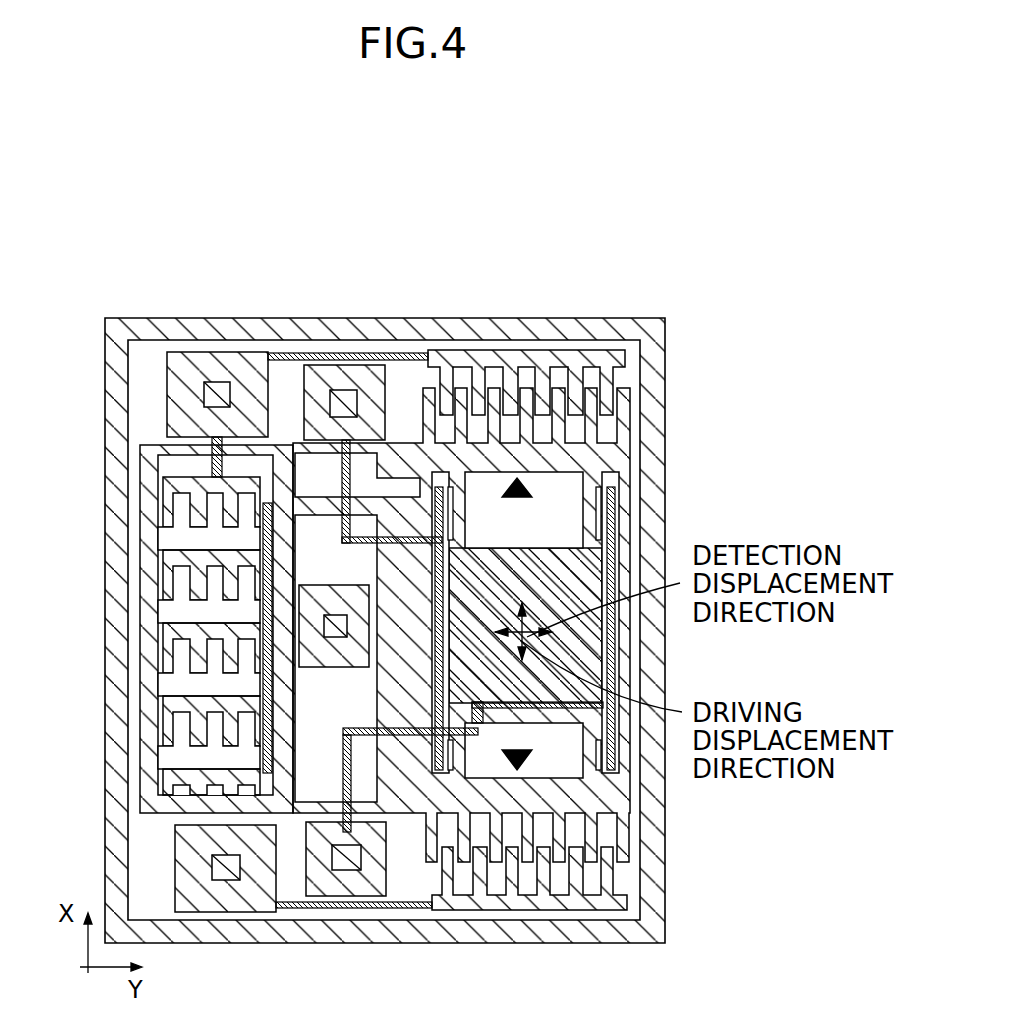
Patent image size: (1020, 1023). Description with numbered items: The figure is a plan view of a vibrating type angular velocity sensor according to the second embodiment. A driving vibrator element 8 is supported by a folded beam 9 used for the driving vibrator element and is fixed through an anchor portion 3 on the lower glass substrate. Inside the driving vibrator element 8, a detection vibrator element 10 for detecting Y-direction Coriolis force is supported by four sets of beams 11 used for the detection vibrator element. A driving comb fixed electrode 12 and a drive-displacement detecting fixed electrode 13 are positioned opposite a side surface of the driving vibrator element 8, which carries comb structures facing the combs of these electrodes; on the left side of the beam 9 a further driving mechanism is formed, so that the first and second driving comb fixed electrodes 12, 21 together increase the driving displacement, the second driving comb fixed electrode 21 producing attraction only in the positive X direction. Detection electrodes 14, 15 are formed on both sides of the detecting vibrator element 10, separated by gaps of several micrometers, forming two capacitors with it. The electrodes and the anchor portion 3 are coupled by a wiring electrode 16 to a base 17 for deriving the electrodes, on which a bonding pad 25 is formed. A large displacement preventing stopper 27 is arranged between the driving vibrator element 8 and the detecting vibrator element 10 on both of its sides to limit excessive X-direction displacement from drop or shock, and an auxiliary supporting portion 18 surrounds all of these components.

The anchor portion 3 is at (386, 620).
The driving vibrator element 8 is at (460, 390).
The beam used for the driving vibrator element 9 is at (308, 450).
The detection vibrator element 10 is at (578, 560).
The beams used for the detection vibrator element 11 is at (590, 770).
The driving comb fixed electrode 12 is at (580, 355).
The drive-displacement detecting fixed electrode 13 is at (605, 855).
The detection electrode 14 is at (443, 757).
The detection electrode 15 is at (607, 500).
The wiring electrode 16 is at (296, 355).
The base for deriving the respective electrodes 17 is at (192, 356).
The auxiliary supporting portion 18 is at (650, 922).
The second driving comb fixed electrode 21 is at (178, 767).
The bonding pad 25 is at (210, 397).
The large displacement preventing stopper 27 is at (520, 487).